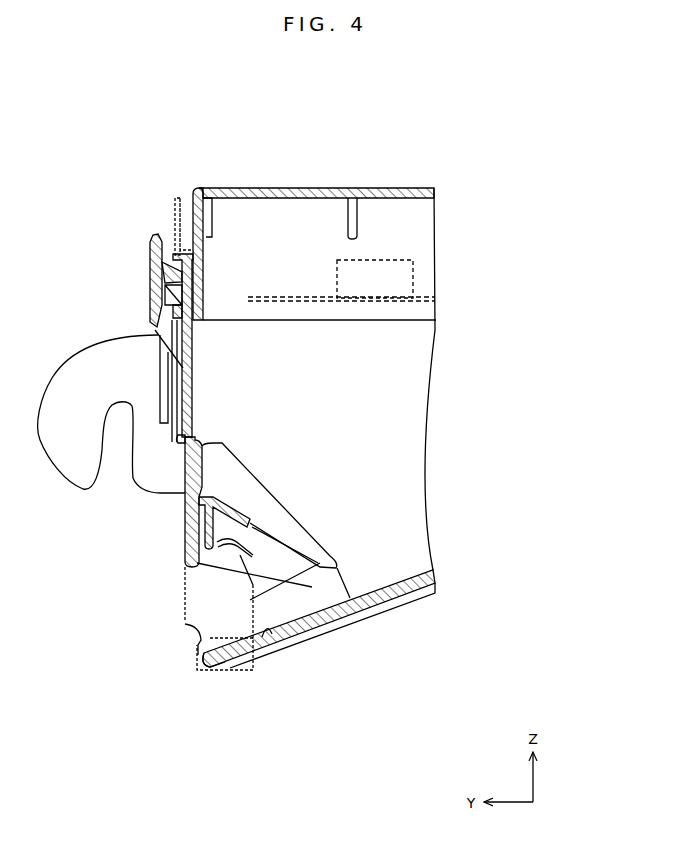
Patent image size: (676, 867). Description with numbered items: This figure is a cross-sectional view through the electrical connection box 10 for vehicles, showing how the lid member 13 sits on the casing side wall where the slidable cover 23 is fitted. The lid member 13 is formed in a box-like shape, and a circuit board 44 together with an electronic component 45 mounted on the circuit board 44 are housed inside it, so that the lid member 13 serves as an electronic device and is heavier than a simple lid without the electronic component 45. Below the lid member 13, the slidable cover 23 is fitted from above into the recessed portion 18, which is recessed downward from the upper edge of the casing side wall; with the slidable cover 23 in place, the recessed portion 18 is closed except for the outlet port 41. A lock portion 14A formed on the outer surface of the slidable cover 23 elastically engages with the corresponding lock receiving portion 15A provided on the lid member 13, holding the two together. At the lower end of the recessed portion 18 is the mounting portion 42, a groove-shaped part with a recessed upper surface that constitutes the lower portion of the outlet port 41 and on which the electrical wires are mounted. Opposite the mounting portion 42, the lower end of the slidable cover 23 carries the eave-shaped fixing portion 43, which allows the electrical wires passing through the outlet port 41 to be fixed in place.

The electrical connection box 10 is at (170, 122).
The lid member 13 is at (247, 188).
The lock portion 14A is at (150, 243).
The lock receiving portion 15A is at (165, 283).
The slidable cover 23 is at (183, 372).
The electronic component 45 is at (398, 272).
The circuit board 44 is at (427, 302).
The fixing portion 43 is at (228, 553).
The recessed portion 18 is at (185, 624).
The outlet port 41 is at (268, 638).
The mounting portion 42 is at (230, 665).